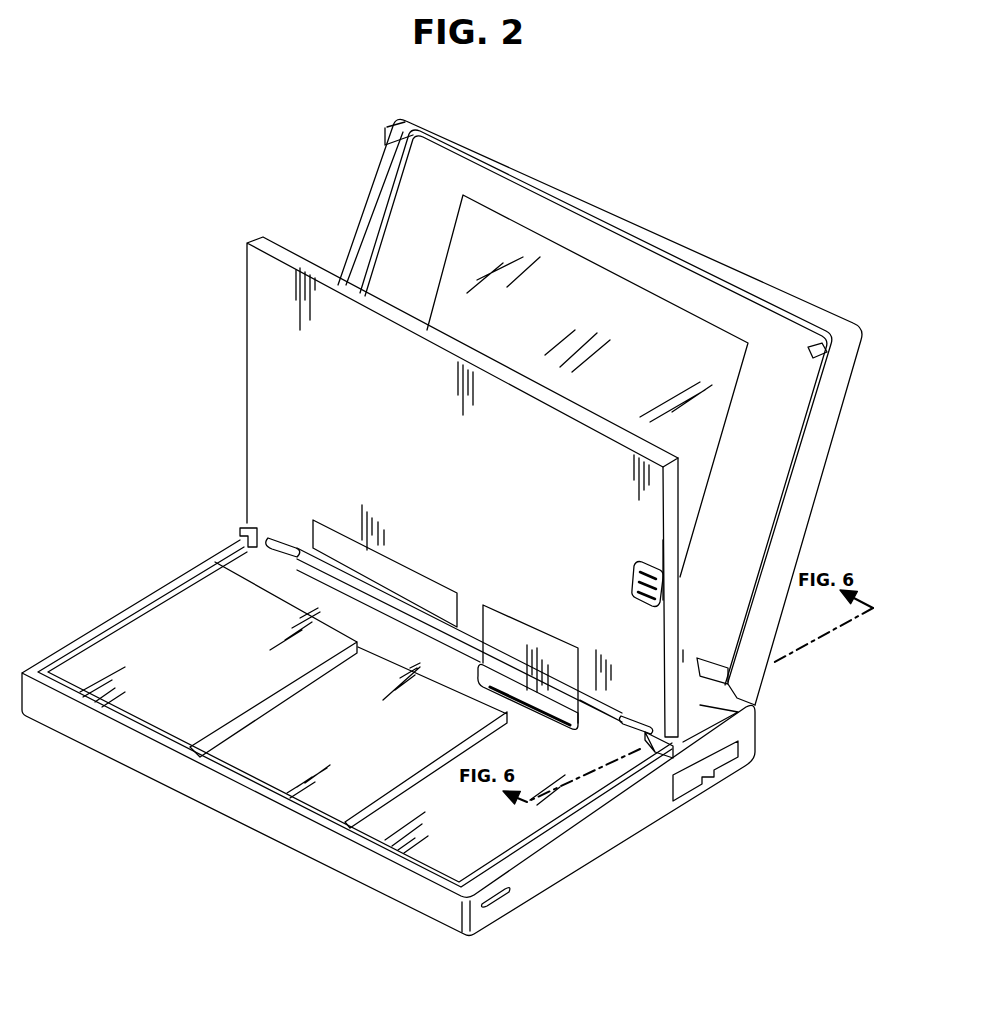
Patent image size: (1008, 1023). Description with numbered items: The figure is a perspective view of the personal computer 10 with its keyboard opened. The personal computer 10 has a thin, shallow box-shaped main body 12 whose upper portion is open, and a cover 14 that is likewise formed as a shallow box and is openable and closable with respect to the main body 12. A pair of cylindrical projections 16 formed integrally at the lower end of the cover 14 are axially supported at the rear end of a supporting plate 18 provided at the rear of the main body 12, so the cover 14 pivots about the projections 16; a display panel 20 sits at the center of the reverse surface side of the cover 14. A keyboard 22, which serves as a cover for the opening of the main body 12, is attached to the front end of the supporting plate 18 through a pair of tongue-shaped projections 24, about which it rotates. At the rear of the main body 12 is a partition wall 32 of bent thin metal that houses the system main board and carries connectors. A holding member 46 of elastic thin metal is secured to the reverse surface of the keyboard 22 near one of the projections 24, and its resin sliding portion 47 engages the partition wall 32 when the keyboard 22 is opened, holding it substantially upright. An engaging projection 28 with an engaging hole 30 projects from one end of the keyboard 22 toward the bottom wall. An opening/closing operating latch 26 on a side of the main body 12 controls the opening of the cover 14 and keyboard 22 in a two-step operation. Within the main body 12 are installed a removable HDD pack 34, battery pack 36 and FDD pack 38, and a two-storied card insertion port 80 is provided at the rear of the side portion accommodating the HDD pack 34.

The personal computer 10 is at (176, 262).
The main body 12 is at (353, 867).
The cover 14 is at (815, 490).
The projections 16 is at (680, 660).
The supporting plate 18 is at (707, 712).
The display panel 20 is at (623, 322).
The keyboard 22 is at (245, 331).
The projections 24 is at (290, 537).
The opening/closing operating latch 26 is at (510, 890).
The engaging projection 28 is at (630, 583).
The engaging hole 30 is at (663, 563).
The partition wall 32 is at (647, 750).
The HDD pack 34 is at (440, 830).
The battery pack 36 is at (272, 762).
The FDD pack 38 is at (152, 687).
The holding member 46 is at (515, 640).
The sliding portion 47 is at (488, 695).
The card insertion port 80 is at (703, 775).